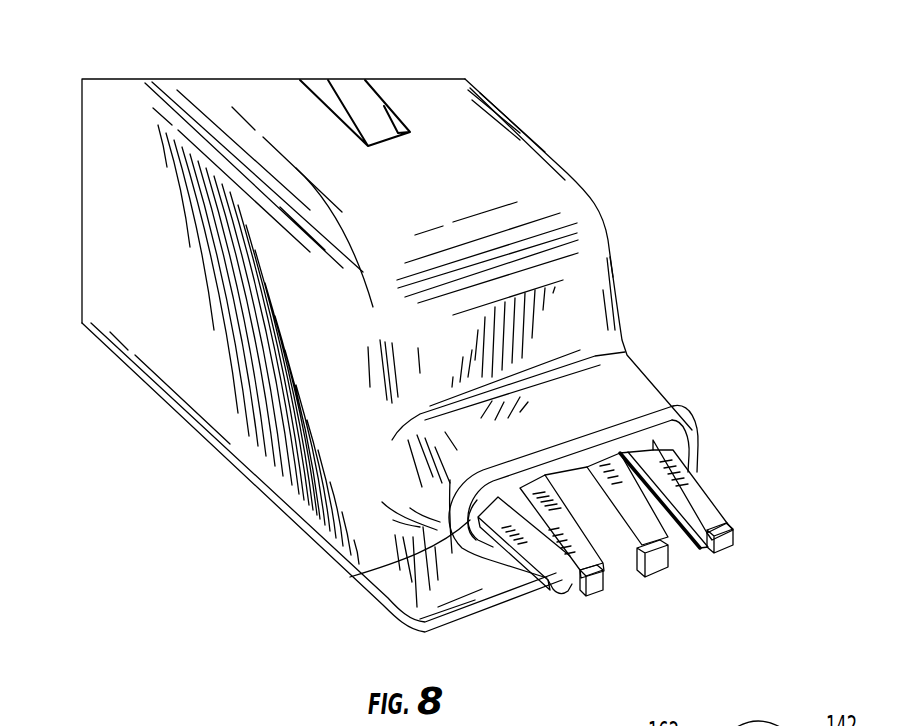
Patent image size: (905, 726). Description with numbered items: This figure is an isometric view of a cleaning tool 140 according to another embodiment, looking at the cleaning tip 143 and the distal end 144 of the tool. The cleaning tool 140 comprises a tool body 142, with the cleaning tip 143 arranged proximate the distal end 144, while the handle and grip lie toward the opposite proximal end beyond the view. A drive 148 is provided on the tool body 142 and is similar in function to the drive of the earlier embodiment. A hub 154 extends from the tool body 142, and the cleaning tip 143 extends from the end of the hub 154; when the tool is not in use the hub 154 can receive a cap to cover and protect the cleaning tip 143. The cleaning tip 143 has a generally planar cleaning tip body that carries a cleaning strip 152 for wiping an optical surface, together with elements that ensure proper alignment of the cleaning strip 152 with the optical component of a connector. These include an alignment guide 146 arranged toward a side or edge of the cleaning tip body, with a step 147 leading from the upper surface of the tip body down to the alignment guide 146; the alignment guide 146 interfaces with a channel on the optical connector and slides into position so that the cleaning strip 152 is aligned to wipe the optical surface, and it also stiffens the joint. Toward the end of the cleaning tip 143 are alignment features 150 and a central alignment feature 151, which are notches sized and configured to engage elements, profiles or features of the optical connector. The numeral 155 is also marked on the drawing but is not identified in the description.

The cleaning tool 140 is at (604, 158).
The tool body 142 is at (115, 262).
The cleaning tip 143 is at (683, 588).
The distal end 144 is at (672, 262).
The alignment guide 146 is at (732, 523).
The step 147 is at (695, 490).
The drive 148 is at (368, 107).
The alignment feature 150 is at (720, 547).
The central alignment feature 151 is at (657, 568).
The cleaning strip 152 is at (697, 552).
The hub 154 is at (620, 392).
The base lip 155 is at (360, 572).